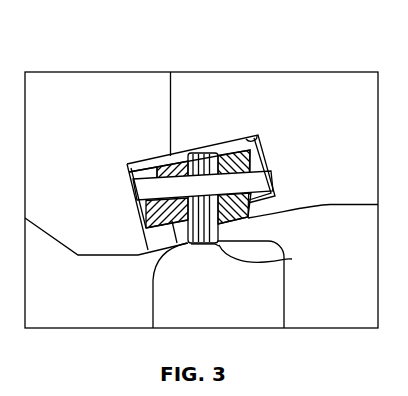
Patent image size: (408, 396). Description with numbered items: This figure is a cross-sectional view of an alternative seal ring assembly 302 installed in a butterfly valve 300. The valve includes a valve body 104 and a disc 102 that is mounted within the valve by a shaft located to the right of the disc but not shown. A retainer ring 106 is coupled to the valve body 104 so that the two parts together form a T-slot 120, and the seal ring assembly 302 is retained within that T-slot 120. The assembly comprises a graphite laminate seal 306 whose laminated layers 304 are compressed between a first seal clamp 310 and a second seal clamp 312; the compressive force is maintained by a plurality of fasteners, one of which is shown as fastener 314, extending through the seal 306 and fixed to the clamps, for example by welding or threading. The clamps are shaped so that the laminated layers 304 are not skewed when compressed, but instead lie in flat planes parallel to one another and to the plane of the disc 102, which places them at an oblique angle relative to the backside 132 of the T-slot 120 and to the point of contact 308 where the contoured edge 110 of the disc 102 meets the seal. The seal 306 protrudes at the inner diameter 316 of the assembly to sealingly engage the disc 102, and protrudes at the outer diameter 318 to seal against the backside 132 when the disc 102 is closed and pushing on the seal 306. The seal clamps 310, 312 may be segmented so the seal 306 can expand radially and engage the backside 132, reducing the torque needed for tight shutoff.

The butterfly valve 300 is at (105, 50).
The disc 102 is at (270, 313).
The valve body 104 is at (323, 196).
The retainer ring 106 is at (70, 229).
The contoured edge 110 is at (168, 257).
The T-slot 120 is at (148, 234).
The backside of the T-slot 132 is at (259, 134).
The seal ring assembly 302 is at (154, 163).
The laminated layers 304 is at (182, 242).
The graphite laminate seal 306 is at (210, 246).
The point of contact 308 is at (272, 258).
The first seal clamp 310 is at (133, 195).
The second seal clamp 312 is at (250, 164).
The fastener 314 is at (145, 185).
The inner diameter 316 is at (220, 247).
The outer diameter 318 is at (192, 157).